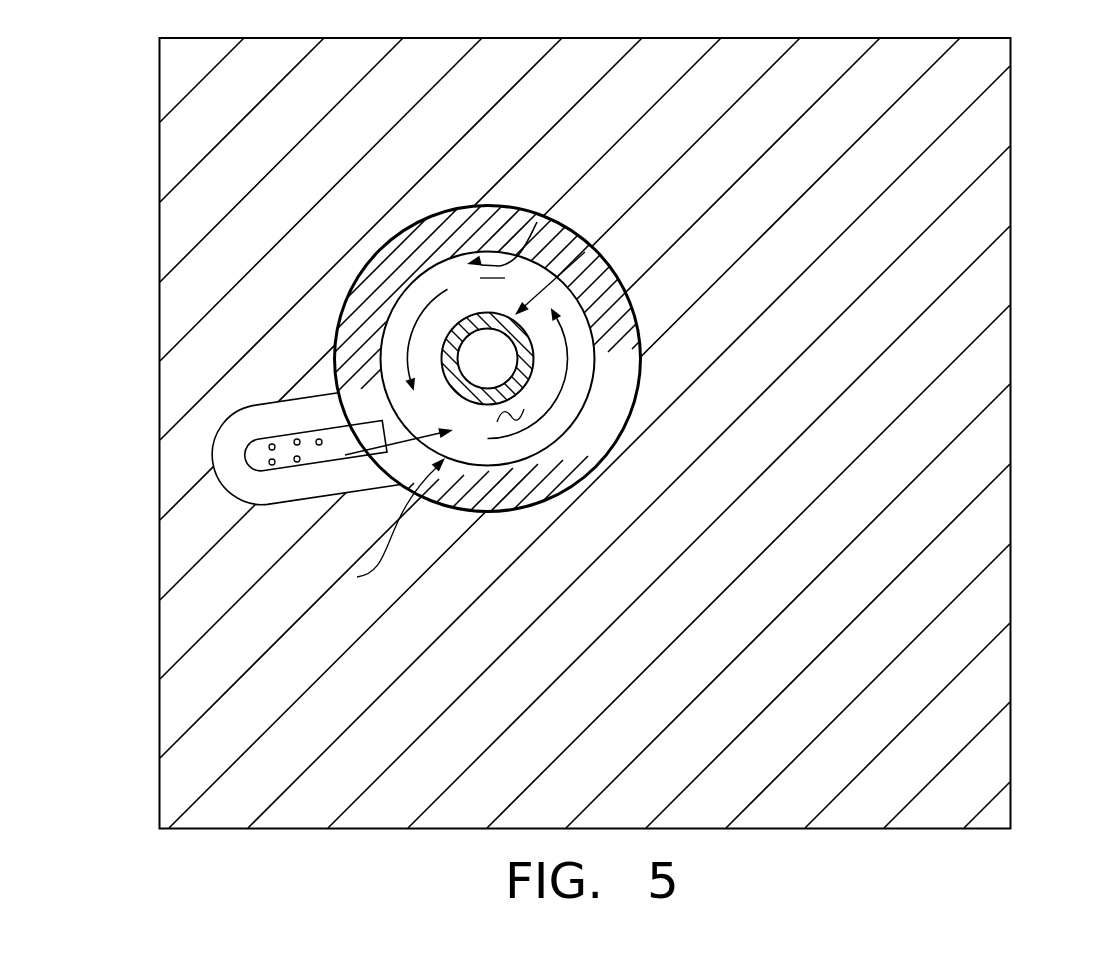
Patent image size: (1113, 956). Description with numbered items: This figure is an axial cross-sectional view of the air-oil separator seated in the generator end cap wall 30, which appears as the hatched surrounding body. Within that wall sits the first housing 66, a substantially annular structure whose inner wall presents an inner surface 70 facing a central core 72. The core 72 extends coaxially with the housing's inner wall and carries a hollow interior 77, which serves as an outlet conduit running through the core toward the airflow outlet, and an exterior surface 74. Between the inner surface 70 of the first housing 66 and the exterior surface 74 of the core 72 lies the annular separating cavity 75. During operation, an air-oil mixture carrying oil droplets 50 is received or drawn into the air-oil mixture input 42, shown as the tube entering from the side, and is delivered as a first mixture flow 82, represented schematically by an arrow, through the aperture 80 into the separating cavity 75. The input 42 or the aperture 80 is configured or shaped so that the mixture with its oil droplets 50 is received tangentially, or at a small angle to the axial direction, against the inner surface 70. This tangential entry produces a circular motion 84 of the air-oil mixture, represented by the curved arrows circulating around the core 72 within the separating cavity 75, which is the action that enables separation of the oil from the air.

The generator end cap wall 30 is at (952, 168).
The air-oil mixture input 42 is at (236, 468).
The oil droplets 50 is at (297, 440).
The first housing 66 is at (598, 300).
The inner surface 70 is at (537, 222).
The core 72 is at (484, 397).
The exterior surface 74 is at (585, 252).
The separating cavity 75 is at (510, 425).
The hollow interior 77 is at (502, 369).
The aperture 80 is at (382, 527).
The first mixture flow 82 is at (347, 493).
The circular motion 84 is at (435, 290).